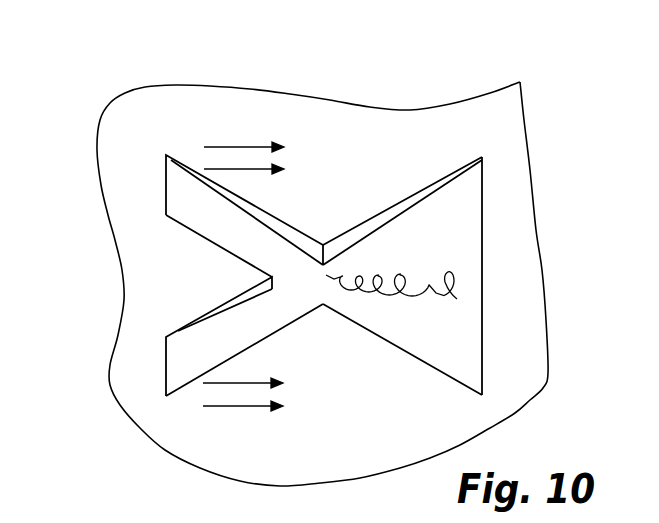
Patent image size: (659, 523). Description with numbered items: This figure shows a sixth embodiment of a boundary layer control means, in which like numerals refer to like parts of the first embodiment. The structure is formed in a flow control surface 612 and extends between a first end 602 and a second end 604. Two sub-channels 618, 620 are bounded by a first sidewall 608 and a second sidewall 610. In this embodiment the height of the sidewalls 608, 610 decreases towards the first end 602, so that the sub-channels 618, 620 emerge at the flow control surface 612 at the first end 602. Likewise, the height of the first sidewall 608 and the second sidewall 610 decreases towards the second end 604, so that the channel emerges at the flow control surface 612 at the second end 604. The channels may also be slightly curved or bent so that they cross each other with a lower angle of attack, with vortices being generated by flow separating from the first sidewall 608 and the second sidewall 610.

The first end 602 is at (163, 237).
The second end 604 is at (484, 267).
The first sidewall 608 is at (403, 206).
The second sidewall 610 is at (437, 358).
The flow control surface 612 is at (255, 103).
The sub-channel 618 is at (180, 195).
The sub-channel 620 is at (175, 363).